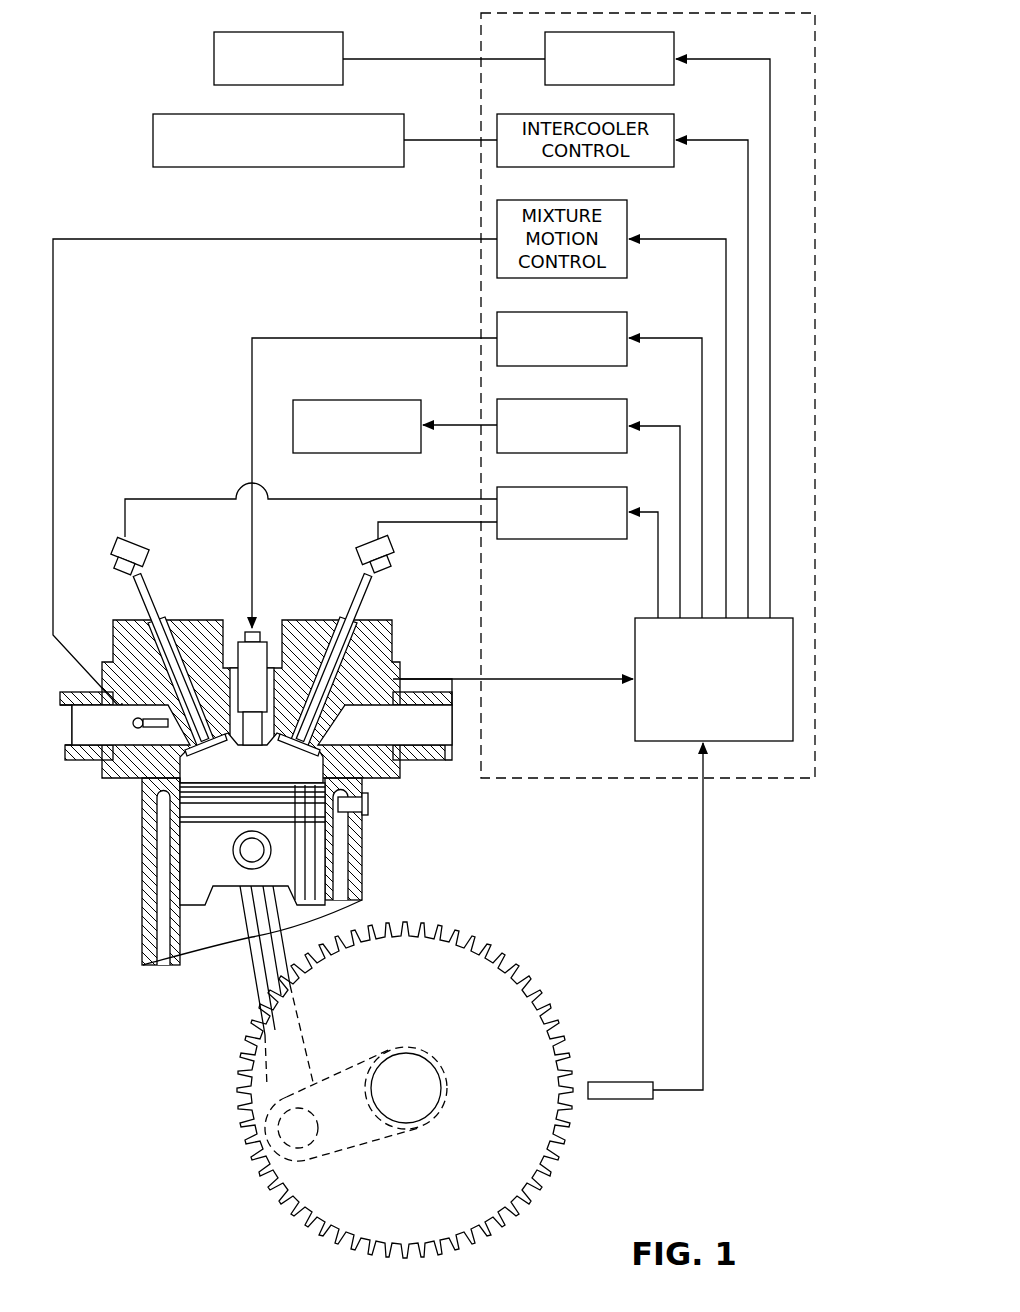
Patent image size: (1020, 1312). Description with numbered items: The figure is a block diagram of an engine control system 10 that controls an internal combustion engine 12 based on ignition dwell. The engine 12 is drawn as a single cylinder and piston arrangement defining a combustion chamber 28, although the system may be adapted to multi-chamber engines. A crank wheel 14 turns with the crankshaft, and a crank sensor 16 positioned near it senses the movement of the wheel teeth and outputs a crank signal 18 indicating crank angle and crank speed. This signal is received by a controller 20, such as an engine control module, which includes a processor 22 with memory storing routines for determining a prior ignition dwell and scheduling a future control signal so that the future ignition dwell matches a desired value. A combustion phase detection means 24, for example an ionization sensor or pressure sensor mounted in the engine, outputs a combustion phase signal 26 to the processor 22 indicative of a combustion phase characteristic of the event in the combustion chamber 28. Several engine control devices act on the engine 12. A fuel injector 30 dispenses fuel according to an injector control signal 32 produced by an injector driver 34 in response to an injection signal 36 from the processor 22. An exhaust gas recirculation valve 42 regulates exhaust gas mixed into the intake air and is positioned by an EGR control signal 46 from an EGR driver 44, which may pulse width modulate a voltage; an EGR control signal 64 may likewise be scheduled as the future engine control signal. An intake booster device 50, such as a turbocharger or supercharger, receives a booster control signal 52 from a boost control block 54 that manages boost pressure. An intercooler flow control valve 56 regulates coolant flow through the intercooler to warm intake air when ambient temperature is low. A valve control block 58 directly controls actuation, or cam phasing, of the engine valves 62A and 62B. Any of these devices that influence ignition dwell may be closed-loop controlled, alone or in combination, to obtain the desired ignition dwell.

The engine control system 10 is at (174, 195).
The internal combustion engine 12 is at (464, 876).
The crank wheel 14 is at (517, 966).
The crank sensor 16 is at (622, 1099).
The crank signal 18 is at (703, 985).
The controller 20 is at (758, 778).
The processor 22 is at (647, 618).
The combustion phase detection means 24 is at (368, 790).
The combustion phase signal 26 is at (465, 678).
The combustion chamber 28 is at (255, 763).
The fuel injector 30 is at (242, 652).
The injector control signal 32 is at (252, 365).
The injector driver 34 is at (605, 312).
The injection signal 36 is at (655, 338).
The exhaust gas recirculation (EGR) valve 42 is at (293, 405).
The EGR driver 44 is at (605, 399).
The EGR control signal 46 is at (461, 425).
The intake booster device 50 is at (212, 51).
The booster control signal 52 is at (432, 62).
The boost control block 54 is at (674, 48).
The intercooler flow control valve 56 is at (188, 114).
The valve control block 58 is at (605, 487).
The engine valve 62A is at (150, 600).
The engine valve 62B is at (352, 600).
The EGR control signal 64 is at (650, 426).